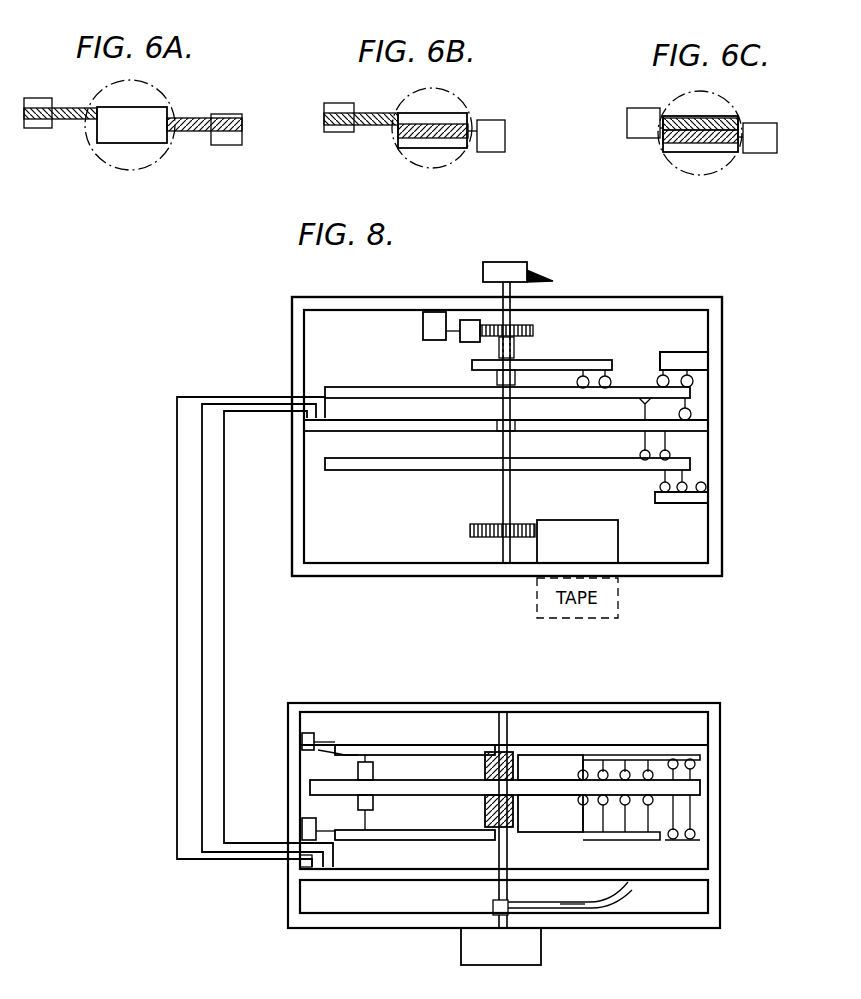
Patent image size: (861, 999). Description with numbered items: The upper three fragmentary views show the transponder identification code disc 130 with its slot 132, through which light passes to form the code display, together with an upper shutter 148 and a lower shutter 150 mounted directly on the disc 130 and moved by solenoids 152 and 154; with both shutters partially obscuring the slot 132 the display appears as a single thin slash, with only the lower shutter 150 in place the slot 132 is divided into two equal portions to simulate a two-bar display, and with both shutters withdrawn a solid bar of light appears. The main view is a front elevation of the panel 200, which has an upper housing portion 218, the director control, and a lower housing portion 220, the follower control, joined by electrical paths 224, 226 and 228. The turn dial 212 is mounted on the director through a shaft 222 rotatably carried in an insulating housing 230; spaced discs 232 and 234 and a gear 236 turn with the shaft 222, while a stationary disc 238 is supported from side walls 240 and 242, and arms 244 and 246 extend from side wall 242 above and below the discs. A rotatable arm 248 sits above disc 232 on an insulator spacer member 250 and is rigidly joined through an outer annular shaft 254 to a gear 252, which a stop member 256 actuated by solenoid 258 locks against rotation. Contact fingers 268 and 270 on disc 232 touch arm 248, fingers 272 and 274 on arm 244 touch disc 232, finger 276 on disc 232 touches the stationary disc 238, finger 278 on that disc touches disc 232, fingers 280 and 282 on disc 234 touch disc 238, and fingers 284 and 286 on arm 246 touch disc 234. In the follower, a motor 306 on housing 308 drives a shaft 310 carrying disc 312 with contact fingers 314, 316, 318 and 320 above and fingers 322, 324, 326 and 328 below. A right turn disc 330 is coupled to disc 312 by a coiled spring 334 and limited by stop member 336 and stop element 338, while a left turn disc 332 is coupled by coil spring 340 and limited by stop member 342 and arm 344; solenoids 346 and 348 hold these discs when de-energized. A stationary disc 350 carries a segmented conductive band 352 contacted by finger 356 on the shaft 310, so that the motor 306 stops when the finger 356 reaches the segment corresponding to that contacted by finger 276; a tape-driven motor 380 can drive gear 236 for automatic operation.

In FIG. 6A, the transponder identification code disc 130 is at (158, 91).
In FIG. 6B, the transponder identification code disc 130 is at (455, 93).
In FIG. 6C, the transponder identification code disc 130 is at (716, 90).
In FIG. 6A, the slot 132 is at (140, 143).
In FIG. 6B, the slot 132 is at (455, 149).
In FIG. 6C, the slot 132 is at (680, 153).
In FIG. 6A, the upper shutter 148 is at (70, 120).
In FIG. 6B, the upper shutter 148 is at (370, 125).
In FIG. 6C, the upper shutter 148 is at (677, 115).
In FIG. 6A, the lower shutter 150 is at (191, 112).
In FIG. 6B, the lower shutter 150 is at (458, 122).
In FIG. 6C, the lower shutter 150 is at (730, 144).
In FIG. 6A, the solenoid 152 is at (44, 93).
In FIG. 6B, the solenoid 152 is at (340, 103).
In FIG. 6C, the solenoid 152 is at (630, 113).
In FIG. 6A, the solenoid 154 is at (222, 146).
In FIG. 6B, the solenoid 154 is at (505, 130).
In FIG. 6C, the solenoid 154 is at (777, 131).
In FIG. 8, the panel 200 is at (218, 372).
In FIG. 8, the turn dial 212 is at (500, 262).
In FIG. 8, the upper housing portion 218 is at (726, 340).
In FIG. 8, the lower housing portion 220 is at (725, 795).
In FIG. 8, the shaft 222 is at (502, 496).
In FIG. 8, the electrical path 224 is at (177, 568).
In FIG. 8, the electrical path 226 is at (202, 543).
In FIG. 8, the electrical path 228 is at (228, 578).
In FIG. 8, the housing 230 is at (652, 297).
In FIG. 8, the rotatable disc 232 is at (395, 398).
In FIG. 8, the rotatable disc 234 is at (418, 474).
In FIG. 8, the gear 236 is at (485, 538).
In FIG. 8, the stationary disc 238 is at (425, 432).
In FIG. 8, the side wall 240 is at (304, 360).
In FIG. 8, the side wall 242 is at (709, 412).
In FIG. 8, the arm 244 is at (709, 356).
In FIG. 8, the arm 246 is at (709, 498).
In FIG. 8, the rotatable arm 248 is at (590, 355).
In FIG. 8, the insulator spacer member 250 is at (497, 381).
In FIG. 8, the gear 252 is at (533, 330).
In FIG. 8, the outer annular shaft 254 is at (514, 347).
In FIG. 8, the stop member 256 is at (468, 320).
In FIG. 8, the solenoid 258 is at (423, 328).
In FIG. 8, the electrical contact finger 268 is at (577, 377).
In FIG. 8, the electrical contact finger 270 is at (599, 378).
In FIG. 8, the electrical contact finger 272 is at (661, 372).
In FIG. 8, the electrical contact finger 274 is at (709, 383).
In FIG. 8, the electrical contact finger 276 is at (641, 406).
In FIG. 8, the contact finger 278 is at (709, 428).
In FIG. 8, the electrical contact finger 280 is at (640, 445).
In FIG. 8, the electrical contact finger 282 is at (660, 446).
In FIG. 8, the contact finger 284 is at (660, 488).
In FIG. 8, the contact finger 286 is at (690, 483).
In FIG. 8, the motor 306 is at (522, 966).
In FIG. 8, the housing 308 is at (615, 703).
In FIG. 8, the rotatable shaft 310 is at (507, 856).
In FIG. 8, the rotatable disc 312 is at (348, 780).
In FIG. 8, the contact finger 314 is at (580, 772).
In FIG. 8, the contact finger 316 is at (600, 764).
In FIG. 8, the contact finger 318 is at (623, 764).
In FIG. 8, the contact finger 320 is at (650, 762).
In FIG. 8, the contact finger 322 is at (580, 810).
In FIG. 8, the contact finger 324 is at (590, 836).
In FIG. 8, the contact finger 326 is at (620, 836).
In FIG. 8, the contact finger 328 is at (655, 838).
In FIG. 8, the right turn disc 330 is at (434, 745).
In FIG. 8, the left turn disc 332 is at (376, 840).
In FIG. 8, the coiled spring 334 is at (485, 768).
In FIG. 8, the stop member 336 is at (374, 762).
In FIG. 8, the stop element 338 is at (322, 745).
In FIG. 8, the coil spring 340 is at (485, 805).
In FIG. 8, the stop member 342 is at (358, 800).
In FIG. 8, the upwardly extending arm 344 is at (368, 814).
In FIG. 8, the solenoid 346 is at (302, 740).
In FIG. 8, the solenoid 348 is at (302, 822).
In FIG. 8, the stationary disc 350 is at (318, 878).
In FIG. 8, the conductive band 352 is at (626, 884).
In FIG. 8, the contact finger 356 is at (572, 908).
In FIG. 8, the motor 380 is at (618, 555).